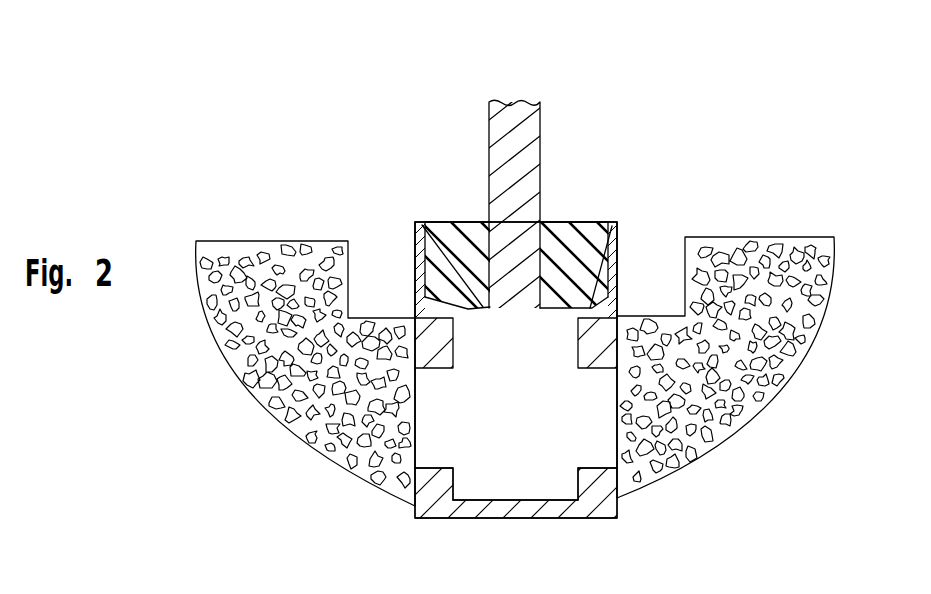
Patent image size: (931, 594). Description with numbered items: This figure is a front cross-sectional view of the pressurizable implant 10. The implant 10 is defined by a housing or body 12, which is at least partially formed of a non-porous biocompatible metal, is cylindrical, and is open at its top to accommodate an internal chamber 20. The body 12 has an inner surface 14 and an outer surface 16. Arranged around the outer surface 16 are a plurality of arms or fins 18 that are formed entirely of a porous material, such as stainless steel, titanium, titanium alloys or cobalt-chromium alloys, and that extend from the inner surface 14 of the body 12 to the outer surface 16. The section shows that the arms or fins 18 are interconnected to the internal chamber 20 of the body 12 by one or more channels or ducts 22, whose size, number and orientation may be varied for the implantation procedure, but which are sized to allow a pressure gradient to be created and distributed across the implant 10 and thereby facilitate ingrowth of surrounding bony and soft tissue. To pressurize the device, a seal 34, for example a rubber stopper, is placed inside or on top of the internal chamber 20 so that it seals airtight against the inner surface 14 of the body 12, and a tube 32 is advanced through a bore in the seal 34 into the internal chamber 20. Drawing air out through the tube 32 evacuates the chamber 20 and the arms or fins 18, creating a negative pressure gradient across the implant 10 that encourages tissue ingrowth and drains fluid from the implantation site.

The pressurizable implant 10 is at (291, 151).
The body 12 is at (618, 212).
The inner surface 14 is at (428, 298).
The outer surface 16 is at (617, 273).
The arms or fins 18 is at (223, 343).
The internal chamber 20 is at (595, 308).
The channels or ducts 22 is at (432, 417).
The tube 32 is at (513, 113).
The seal 34 is at (475, 235).